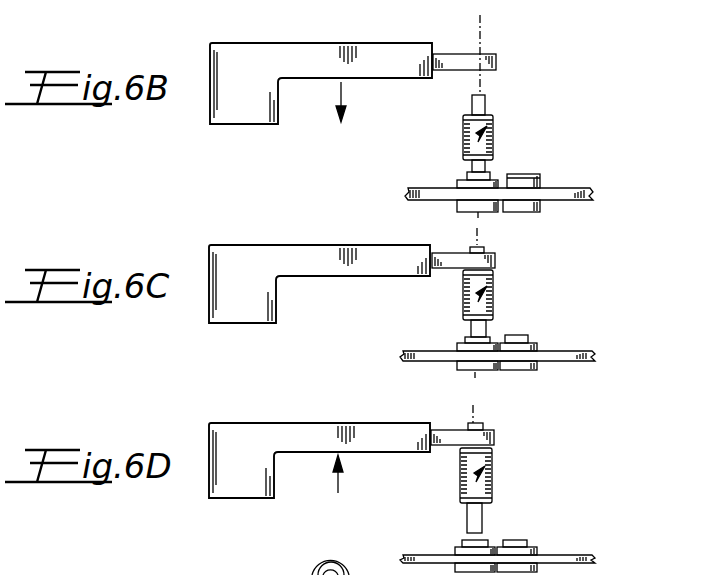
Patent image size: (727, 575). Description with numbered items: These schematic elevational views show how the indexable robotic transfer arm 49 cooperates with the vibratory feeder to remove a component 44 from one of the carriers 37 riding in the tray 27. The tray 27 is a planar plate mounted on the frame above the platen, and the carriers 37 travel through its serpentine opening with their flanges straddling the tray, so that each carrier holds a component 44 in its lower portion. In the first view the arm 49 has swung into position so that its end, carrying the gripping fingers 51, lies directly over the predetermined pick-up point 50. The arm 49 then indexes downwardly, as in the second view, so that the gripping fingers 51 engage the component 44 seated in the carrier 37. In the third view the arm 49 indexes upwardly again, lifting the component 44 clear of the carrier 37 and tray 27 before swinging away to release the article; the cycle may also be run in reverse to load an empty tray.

In FIG. 6B, the tray 27 is at (568, 187).
In FIG. 6C, the tray 27 is at (559, 372).
In FIG. 6D, the tray 27 is at (561, 554).
In FIG. 6B, the carriers 37 is at (452, 181).
In FIG. 6C, the carriers 37 is at (452, 344).
In FIG. 6D, the carriers 37 is at (452, 545).
In FIG. 6B, the component 44 is at (495, 130).
In FIG. 6C, the component 44 is at (495, 298).
In FIG. 6D, the component 44 is at (493, 465).
In FIG. 6B, the robotic transfer arm 49 is at (262, 48).
In FIG. 6C, the robotic transfer arm 49 is at (256, 252).
In FIG. 6D, the robotic transfer arm 49 is at (250, 430).
In FIG. 6B, the pick-up point 50 is at (482, 78).
In FIG. 6B, the gripping fingers 51 is at (497, 62).
In FIG. 6C, the gripping fingers 51 is at (497, 262).
In FIG. 6D, the gripping fingers 51 is at (496, 443).